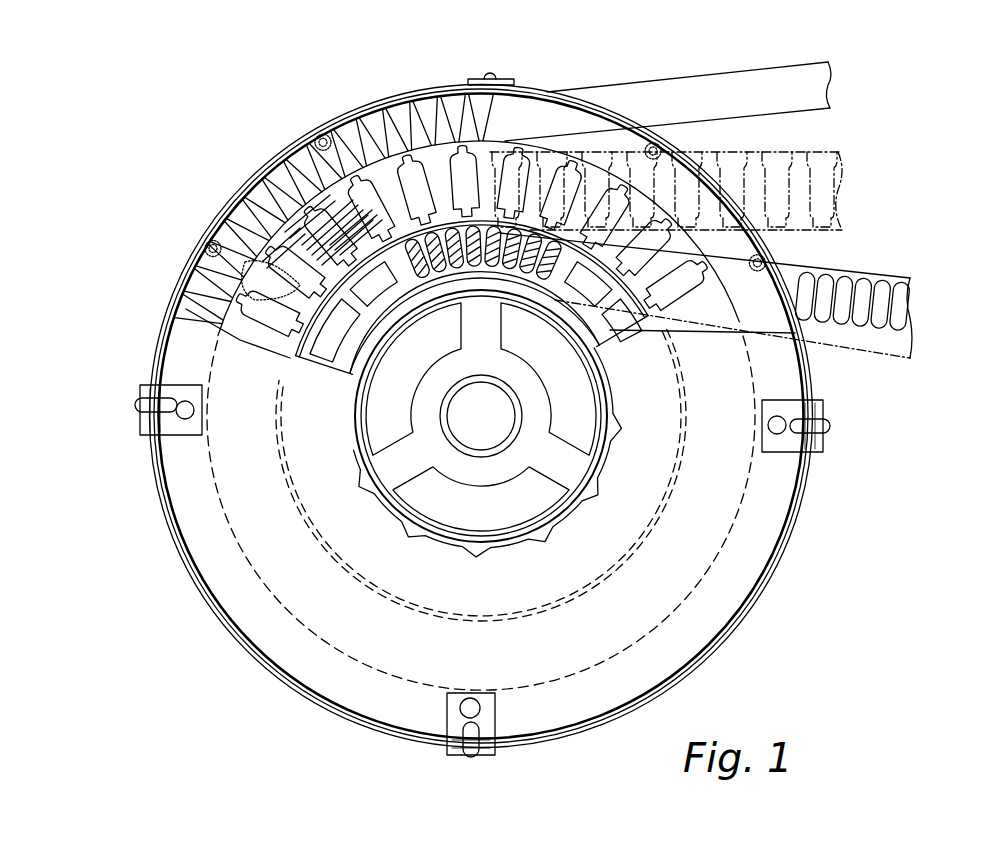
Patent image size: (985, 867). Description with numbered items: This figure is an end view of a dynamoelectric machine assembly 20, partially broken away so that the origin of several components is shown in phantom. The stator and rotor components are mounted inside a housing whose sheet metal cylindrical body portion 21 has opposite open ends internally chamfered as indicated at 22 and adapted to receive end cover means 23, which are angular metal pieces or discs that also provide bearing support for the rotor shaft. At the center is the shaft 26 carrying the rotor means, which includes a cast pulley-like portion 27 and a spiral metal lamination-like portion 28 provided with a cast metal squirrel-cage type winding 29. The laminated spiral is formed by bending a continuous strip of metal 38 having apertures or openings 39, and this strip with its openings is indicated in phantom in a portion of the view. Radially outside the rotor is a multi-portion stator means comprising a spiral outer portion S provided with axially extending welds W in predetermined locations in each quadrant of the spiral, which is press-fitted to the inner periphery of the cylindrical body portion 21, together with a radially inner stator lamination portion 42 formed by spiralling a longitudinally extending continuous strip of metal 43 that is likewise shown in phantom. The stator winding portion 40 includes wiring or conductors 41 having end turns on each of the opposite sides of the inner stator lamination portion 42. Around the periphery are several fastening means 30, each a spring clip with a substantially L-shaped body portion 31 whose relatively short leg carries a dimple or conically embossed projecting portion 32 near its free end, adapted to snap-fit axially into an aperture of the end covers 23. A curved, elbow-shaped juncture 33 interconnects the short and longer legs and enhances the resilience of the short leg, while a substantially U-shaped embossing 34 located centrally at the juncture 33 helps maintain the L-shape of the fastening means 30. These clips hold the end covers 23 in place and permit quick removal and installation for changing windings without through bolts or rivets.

The dynamoelectric machine assembly 20 is at (718, 657).
The sheet metal cylindrical body portion 21 is at (222, 242).
The internal chamfer 22 is at (205, 265).
The end cover means 23 is at (752, 570).
The shaft 26 is at (500, 420).
The cast pulley-like portion 27 is at (495, 336).
The spiral metal lamination-like portion 28 is at (443, 290).
The cast metal squirrel-cage type winding 29 is at (496, 245).
The fastening means 30 is at (485, 411).
The L-shaped body portion 31 is at (170, 427).
The dimple or conically embossed projecting portion 32 is at (190, 410).
The elbow-shaped juncture 33 is at (148, 386).
The U-shaped embossing 34 is at (140, 405).
The continuous strip of metal 38 is at (738, 294).
The apertures or openings 39 is at (898, 298).
The stator winding portion 40 is at (298, 217).
The wiring or conductors 41 is at (303, 238).
The radially inner stator lamination portion 42 is at (443, 125).
The continuous strip of metal 43 is at (840, 226).
The spiral outer portion S is at (405, 125).
The welds W is at (322, 134).